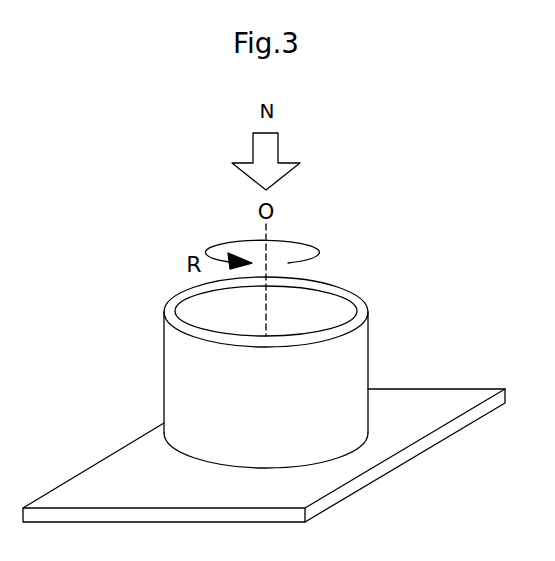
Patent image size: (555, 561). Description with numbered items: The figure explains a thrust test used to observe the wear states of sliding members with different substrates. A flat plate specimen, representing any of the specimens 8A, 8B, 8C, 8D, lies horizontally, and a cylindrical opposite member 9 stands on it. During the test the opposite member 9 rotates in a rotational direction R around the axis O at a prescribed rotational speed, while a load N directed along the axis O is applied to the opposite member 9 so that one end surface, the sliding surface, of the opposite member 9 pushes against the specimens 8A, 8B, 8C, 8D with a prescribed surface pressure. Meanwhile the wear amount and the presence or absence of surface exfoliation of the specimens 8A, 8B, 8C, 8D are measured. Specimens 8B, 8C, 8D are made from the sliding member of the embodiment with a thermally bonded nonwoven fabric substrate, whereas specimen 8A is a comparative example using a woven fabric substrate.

The opposite member 9 is at (368, 342).
The flat specimen 8A is at (264, 439).
The flat specimen 8B is at (264, 439).
The flat specimen 8C is at (264, 439).
The flat specimen 8D is at (440, 389).